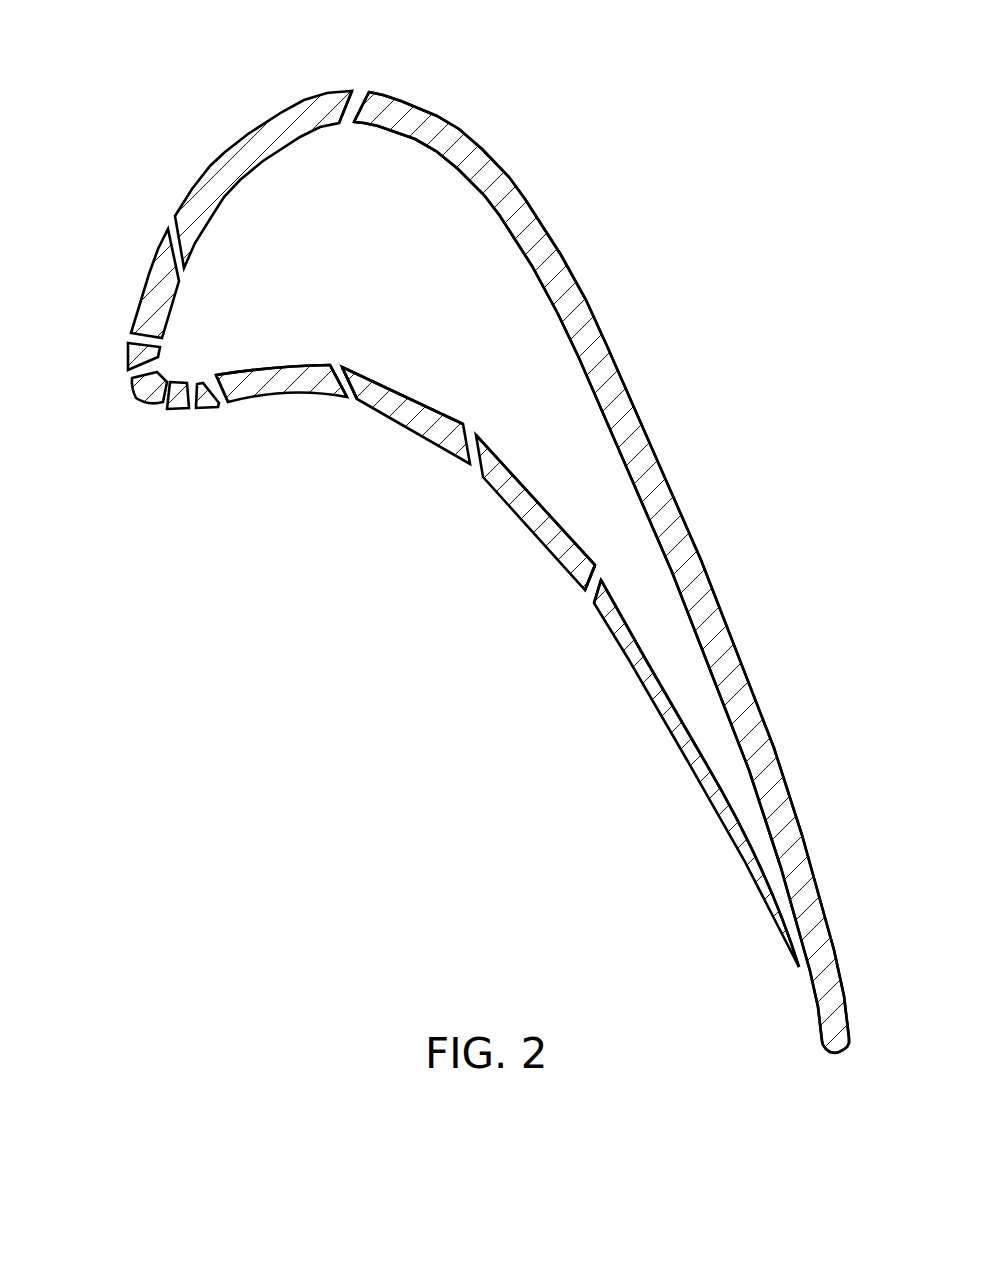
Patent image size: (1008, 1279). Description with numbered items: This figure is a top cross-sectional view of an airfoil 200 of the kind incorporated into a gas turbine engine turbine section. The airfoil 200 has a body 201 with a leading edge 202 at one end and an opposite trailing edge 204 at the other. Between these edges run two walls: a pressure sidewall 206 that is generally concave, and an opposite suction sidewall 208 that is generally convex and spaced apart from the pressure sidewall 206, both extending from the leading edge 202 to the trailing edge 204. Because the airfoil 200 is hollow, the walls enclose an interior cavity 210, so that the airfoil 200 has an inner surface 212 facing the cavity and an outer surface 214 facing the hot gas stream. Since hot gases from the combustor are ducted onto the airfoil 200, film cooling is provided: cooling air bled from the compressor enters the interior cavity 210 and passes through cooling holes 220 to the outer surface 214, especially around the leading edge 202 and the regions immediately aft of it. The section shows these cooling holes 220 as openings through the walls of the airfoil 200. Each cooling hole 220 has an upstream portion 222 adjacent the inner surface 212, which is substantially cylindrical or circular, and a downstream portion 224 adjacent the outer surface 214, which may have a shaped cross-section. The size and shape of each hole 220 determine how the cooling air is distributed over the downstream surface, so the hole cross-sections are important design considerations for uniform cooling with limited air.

The airfoil 200 is at (465, 565).
The body 201 is at (447, 131).
The leading edge 202 is at (152, 258).
The trailing edge 204 is at (838, 1055).
The pressure sidewall 206 is at (445, 446).
The suction sidewall 208 is at (532, 213).
The interior cavity 210 is at (383, 277).
The inner surface 212 is at (265, 370).
The outer surface 214 is at (250, 402).
The cooling holes 220 is at (365, 91).
The upstream portion 222 is at (348, 370).
The downstream portion 224 is at (340, 391).